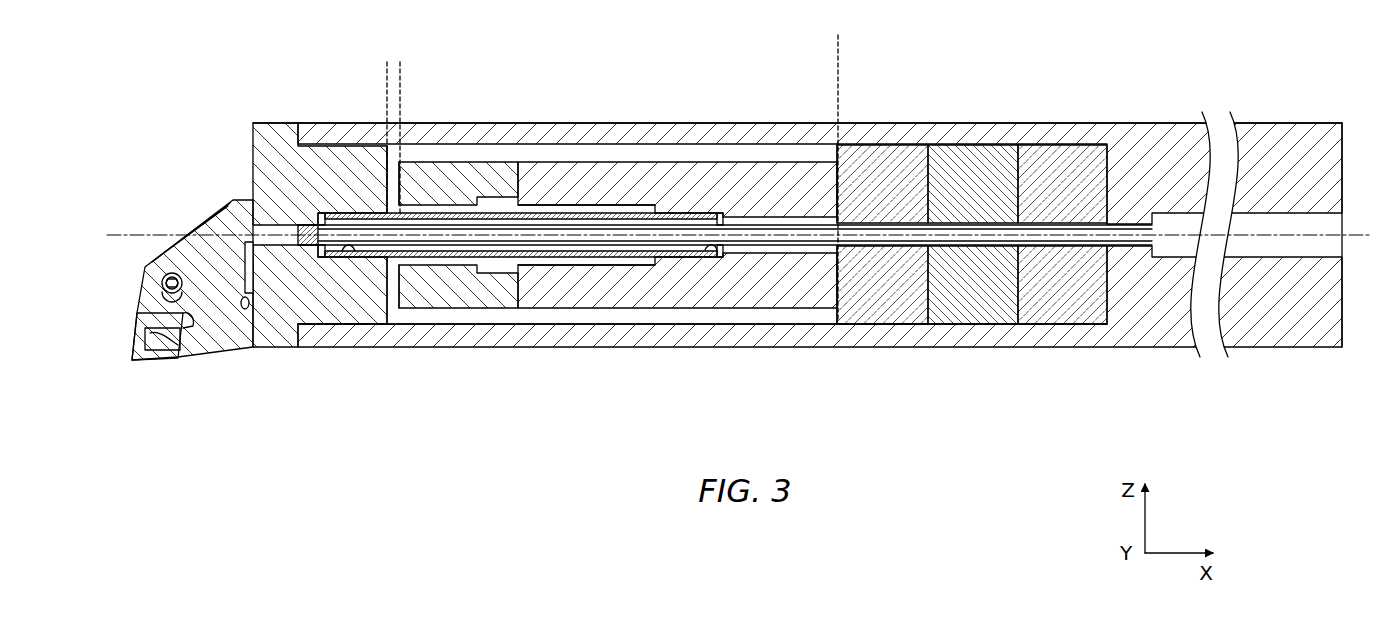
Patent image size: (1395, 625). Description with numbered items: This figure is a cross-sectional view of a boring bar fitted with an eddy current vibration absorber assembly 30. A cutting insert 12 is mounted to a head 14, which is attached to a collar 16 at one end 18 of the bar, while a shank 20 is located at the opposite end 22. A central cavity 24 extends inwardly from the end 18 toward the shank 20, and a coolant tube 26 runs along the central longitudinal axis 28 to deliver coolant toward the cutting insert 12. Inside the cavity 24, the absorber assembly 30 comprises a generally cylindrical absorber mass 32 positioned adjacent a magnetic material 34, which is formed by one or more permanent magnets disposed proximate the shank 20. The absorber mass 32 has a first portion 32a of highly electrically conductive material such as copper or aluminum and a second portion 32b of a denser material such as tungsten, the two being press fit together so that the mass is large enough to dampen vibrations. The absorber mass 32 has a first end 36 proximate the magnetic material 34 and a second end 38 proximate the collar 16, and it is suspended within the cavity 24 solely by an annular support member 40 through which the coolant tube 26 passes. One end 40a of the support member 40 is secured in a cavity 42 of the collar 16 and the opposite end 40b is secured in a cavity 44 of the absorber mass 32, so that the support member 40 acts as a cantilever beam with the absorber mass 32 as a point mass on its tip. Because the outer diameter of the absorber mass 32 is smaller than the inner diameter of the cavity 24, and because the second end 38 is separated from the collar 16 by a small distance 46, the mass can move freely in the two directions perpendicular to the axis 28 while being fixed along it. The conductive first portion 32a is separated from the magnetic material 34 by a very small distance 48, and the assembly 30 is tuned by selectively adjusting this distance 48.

The cutting insert 12 is at (154, 368).
The head 14 is at (142, 266).
The collar 16 is at (273, 116).
The end of the boring bar 18 is at (248, 171).
The shank 20 is at (1298, 352).
The opposite end of the boring bar 22 is at (1348, 311).
The central cavity 24 is at (512, 321).
The coolant tube 26 is at (776, 252).
The central longitudinal axis 28 is at (1353, 234).
The eddy current vibration absorber assembly 30 is at (624, 158).
The absorber mass 32 is at (573, 318).
The first portion of the absorber mass 32a is at (643, 315).
The second portion of the absorber mass 32b is at (444, 315).
The magnetic material 34 is at (887, 330).
The first end of the absorber mass 36 is at (848, 185).
The second end of the absorber mass 38 is at (395, 181).
The support member 40 is at (397, 262).
The first end of the support member 40a is at (312, 207).
The second end of the support member 40b is at (736, 210).
The cavity of the collar 42 is at (350, 253).
The cavity of the absorber mass 44 is at (716, 252).
The distance between the second end and the collar 46 is at (352, 79).
The distance between the absorber mass and the magnetic material 48 is at (803, 52).